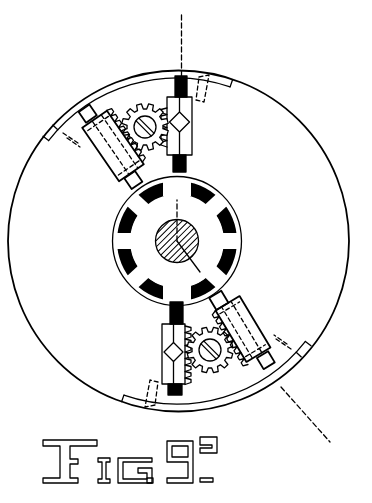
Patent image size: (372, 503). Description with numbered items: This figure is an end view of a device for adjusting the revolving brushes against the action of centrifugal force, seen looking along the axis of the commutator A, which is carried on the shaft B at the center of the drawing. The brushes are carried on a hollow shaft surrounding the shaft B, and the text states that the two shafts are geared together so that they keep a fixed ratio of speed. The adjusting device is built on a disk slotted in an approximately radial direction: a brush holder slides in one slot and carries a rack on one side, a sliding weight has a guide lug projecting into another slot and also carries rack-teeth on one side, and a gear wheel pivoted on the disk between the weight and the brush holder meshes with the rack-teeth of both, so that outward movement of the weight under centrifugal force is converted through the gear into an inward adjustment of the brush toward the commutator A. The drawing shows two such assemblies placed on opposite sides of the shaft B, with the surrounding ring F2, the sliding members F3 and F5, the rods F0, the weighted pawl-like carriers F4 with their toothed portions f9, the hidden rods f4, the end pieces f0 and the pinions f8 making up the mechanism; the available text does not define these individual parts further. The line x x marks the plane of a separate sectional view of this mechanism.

The ratchet ring F2 is at (178, 241).
The commutator A is at (210, 197).
The shaft B is at (199, 233).
The slide block F5 is at (187, 141).
The rack on slide block F3 is at (134, 105).
The threaded rod F0 is at (188, 77).
The pinion f8 is at (161, 106).
The pawl carrier F4 is at (266, 308).
The pawl rack teeth f9 is at (236, 418).
The pawl rod f4 is at (112, 107).
The pawl end block f0 is at (303, 380).
The section line x x is at (253, 231).